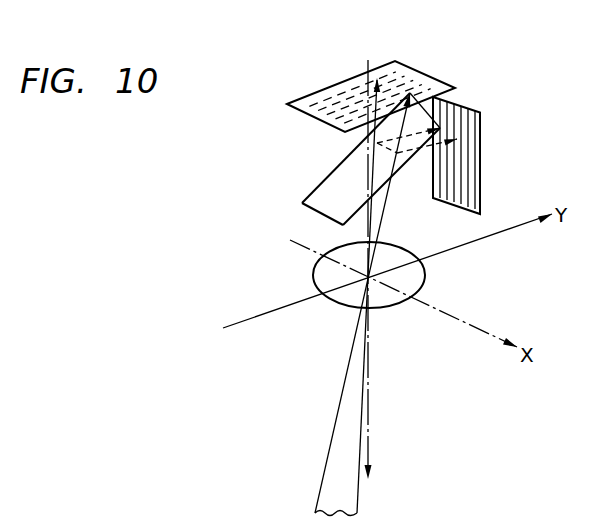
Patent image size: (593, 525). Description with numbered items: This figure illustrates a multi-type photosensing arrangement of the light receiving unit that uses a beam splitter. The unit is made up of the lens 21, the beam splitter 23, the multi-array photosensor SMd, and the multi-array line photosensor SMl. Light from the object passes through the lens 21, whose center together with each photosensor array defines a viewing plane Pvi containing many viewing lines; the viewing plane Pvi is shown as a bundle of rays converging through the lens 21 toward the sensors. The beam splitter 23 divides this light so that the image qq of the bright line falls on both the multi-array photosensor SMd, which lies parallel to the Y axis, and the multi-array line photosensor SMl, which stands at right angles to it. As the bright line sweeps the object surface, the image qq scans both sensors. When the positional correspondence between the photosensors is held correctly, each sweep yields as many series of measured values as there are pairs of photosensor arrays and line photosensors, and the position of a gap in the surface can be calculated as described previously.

The lens 21 is at (426, 279).
The beam splitter 23 is at (321, 184).
The multi-array photosensor SMd is at (375, 93).
The multi-array line photosensor SMl is at (475, 155).
The bright line image qq is at (367, 62).
The viewing plane Pvi is at (327, 459).